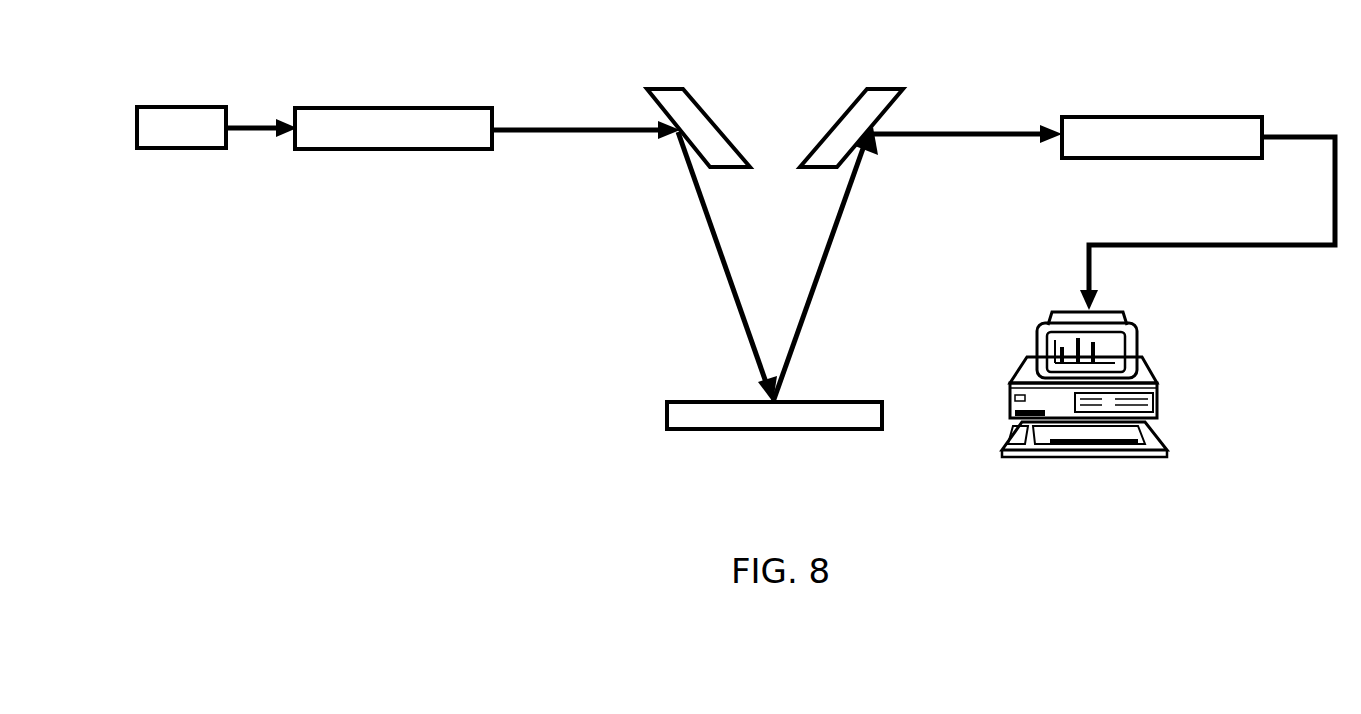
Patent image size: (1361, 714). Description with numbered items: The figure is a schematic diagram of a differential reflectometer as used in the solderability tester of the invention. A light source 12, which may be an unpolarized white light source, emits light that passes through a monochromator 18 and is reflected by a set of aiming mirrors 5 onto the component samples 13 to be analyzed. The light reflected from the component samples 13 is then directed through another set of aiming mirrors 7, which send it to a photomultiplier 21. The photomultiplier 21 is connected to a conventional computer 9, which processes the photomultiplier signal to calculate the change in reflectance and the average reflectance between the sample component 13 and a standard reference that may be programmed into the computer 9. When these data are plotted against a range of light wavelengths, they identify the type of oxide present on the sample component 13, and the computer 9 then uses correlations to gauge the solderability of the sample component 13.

The light source 12 is at (165, 150).
The monochromator 18 is at (395, 150).
The aiming mirrors 5 is at (703, 115).
The aiming mirrors 7 is at (897, 92).
The component samples 13 is at (667, 414).
The photomultiplier 21 is at (1172, 117).
The computer 9 is at (1145, 345).